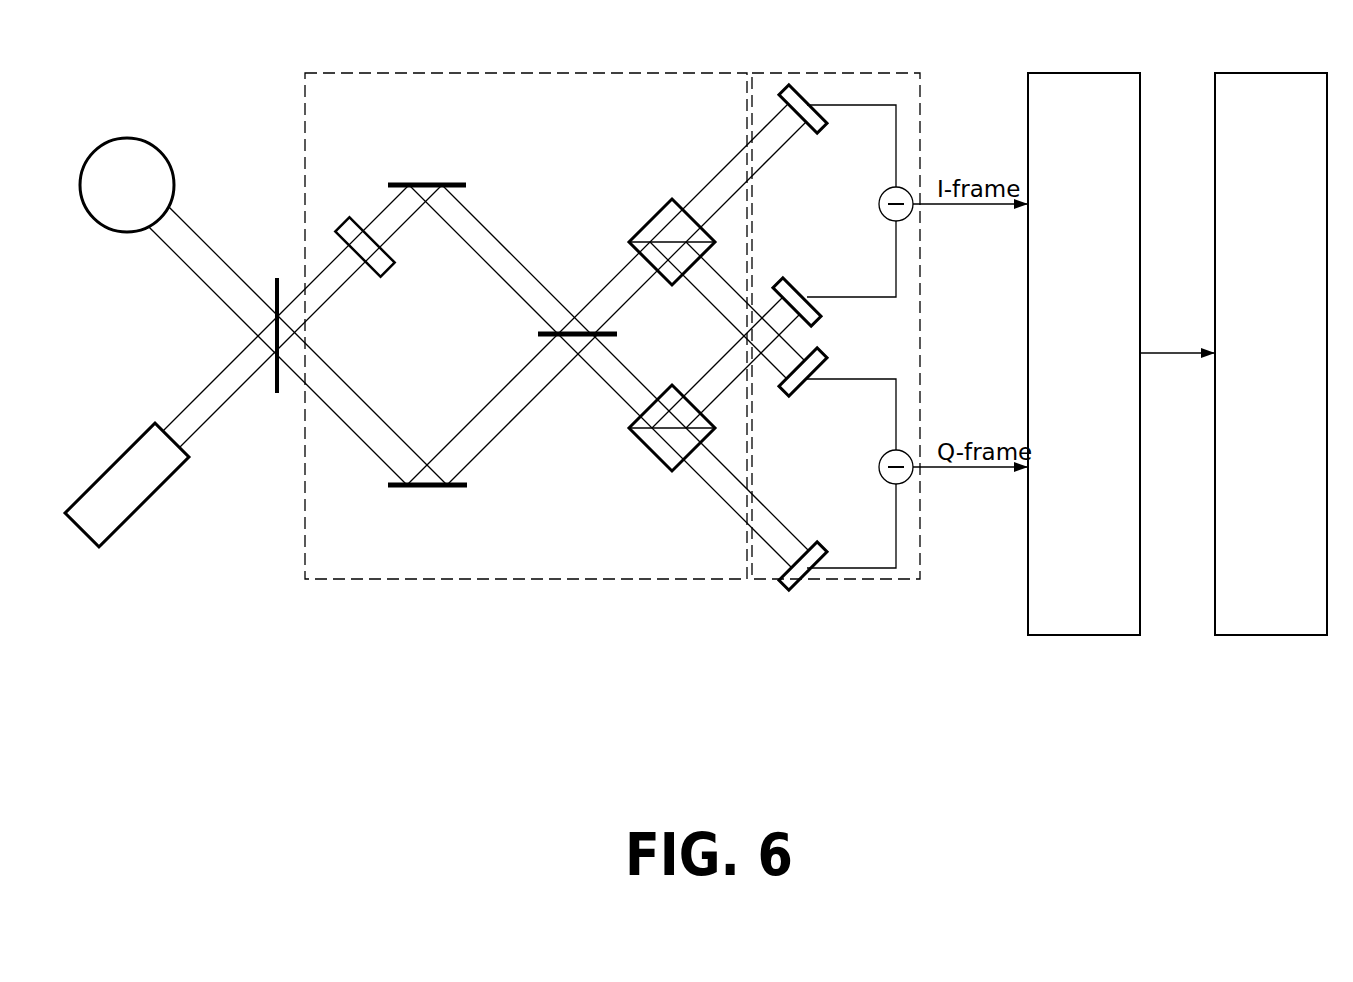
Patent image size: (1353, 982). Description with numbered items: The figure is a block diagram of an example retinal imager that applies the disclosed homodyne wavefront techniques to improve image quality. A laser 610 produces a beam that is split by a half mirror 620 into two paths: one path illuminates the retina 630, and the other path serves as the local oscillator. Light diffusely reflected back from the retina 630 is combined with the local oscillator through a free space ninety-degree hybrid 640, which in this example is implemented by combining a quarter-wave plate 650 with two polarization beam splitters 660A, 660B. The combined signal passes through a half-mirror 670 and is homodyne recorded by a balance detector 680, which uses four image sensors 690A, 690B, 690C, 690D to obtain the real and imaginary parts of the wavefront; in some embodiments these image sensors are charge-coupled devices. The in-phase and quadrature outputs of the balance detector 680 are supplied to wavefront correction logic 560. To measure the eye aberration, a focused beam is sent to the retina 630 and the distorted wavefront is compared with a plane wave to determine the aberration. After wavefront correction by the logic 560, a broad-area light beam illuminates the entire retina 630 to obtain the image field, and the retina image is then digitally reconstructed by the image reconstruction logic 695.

The laser 610 is at (117, 533).
The half mirror 620 is at (275, 393).
The retina 630 is at (132, 136).
The free space ninety-degree hybrid 640 is at (343, 579).
The quarter-wave plate 650 is at (348, 222).
The polarization beam splitter 660A is at (652, 212).
The polarization beam splitter 660B is at (652, 452).
The half-mirror 670 is at (556, 333).
The balance detector 680 is at (808, 580).
The image sensor 690A is at (783, 93).
The image sensor 690B is at (778, 280).
The image sensor 690C is at (818, 350).
The image sensor 690D is at (818, 545).
The wavefront correction logic 560 is at (1084, 354).
The image reconstruction logic 695 is at (1271, 354).